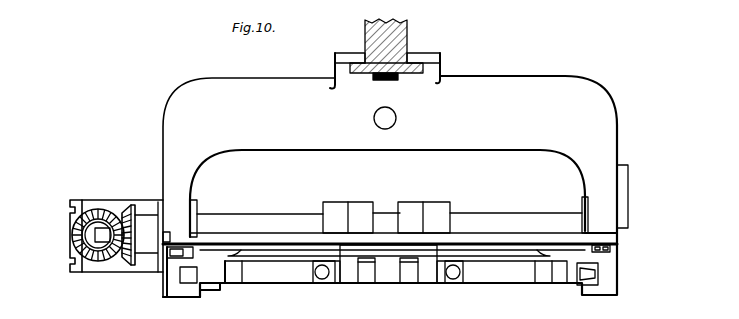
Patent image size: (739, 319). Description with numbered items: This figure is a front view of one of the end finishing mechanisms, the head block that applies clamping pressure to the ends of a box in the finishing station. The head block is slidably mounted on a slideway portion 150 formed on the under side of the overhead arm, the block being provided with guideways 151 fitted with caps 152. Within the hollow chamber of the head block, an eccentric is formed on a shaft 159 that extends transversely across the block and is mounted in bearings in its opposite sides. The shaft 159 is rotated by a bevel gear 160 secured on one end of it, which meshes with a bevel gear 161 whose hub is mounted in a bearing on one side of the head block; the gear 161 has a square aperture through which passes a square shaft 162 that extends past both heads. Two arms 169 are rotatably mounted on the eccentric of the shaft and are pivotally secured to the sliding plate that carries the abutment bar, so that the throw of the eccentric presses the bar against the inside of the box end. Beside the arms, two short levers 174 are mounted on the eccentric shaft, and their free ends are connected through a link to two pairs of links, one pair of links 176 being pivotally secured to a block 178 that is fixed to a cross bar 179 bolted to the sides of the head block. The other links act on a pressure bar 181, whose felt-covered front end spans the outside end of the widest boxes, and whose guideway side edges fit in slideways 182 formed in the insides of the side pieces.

The slideway portion 150 is at (408, 75).
The guideways 151 is at (490, 60).
The caps 152 is at (413, 53).
The shaft 159 is at (566, 199).
The bevel gear 160 is at (133, 264).
The bevel gear 161 is at (72, 233).
The square shaft 162 is at (105, 227).
The arms 169 is at (325, 206).
The short levers 174 is at (412, 207).
The links 176 is at (410, 287).
The block 178 is at (400, 258).
The cross bar 179 is at (220, 240).
The pressure bar 181 is at (285, 275).
The slideways 182 is at (212, 288).